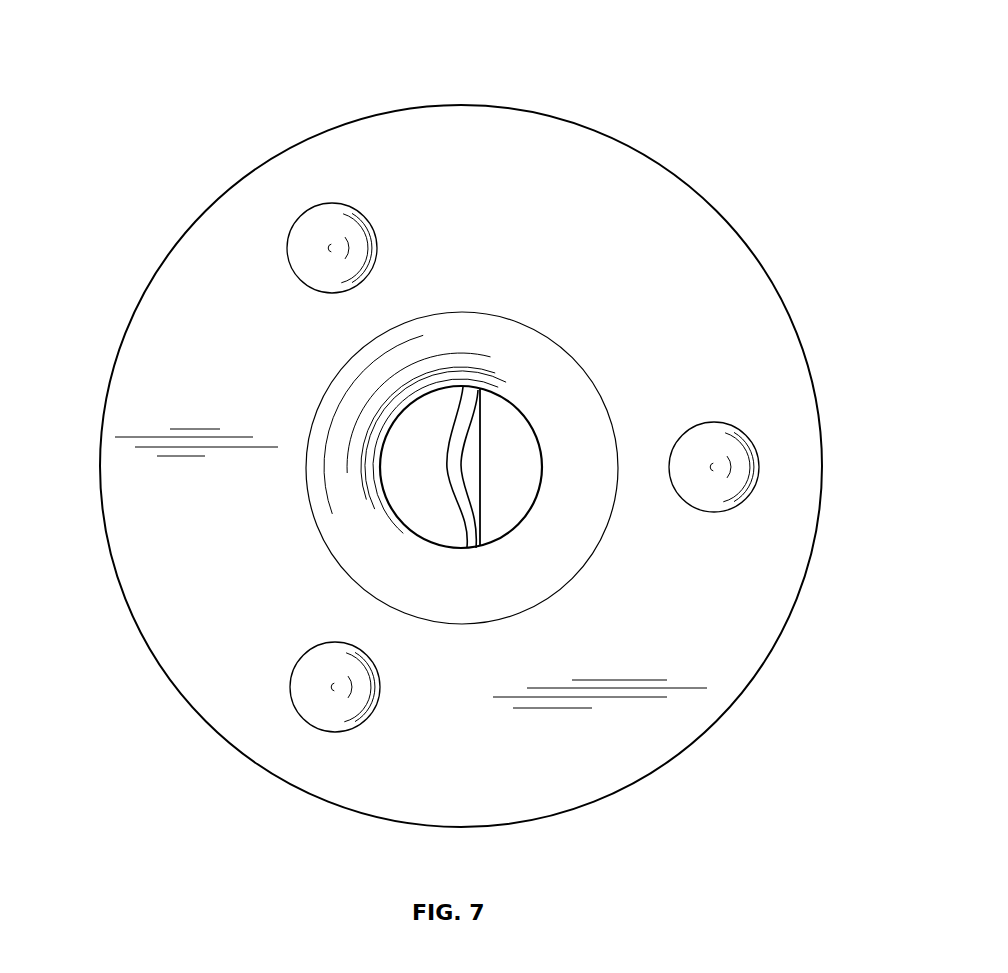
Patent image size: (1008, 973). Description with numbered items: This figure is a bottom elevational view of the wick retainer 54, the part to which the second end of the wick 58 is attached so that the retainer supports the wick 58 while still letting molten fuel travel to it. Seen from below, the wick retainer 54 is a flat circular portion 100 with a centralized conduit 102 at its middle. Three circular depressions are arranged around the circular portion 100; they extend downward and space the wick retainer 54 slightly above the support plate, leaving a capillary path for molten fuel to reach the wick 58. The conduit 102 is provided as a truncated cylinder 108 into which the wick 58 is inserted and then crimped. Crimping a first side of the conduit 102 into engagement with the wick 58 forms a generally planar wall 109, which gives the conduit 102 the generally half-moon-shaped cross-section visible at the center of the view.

The wick retainer 54 is at (166, 41).
The wick 58 is at (400, 470).
The flat circular portion 100 is at (194, 663).
The conduit 102 is at (473, 390).
The truncated cylinder 108 is at (397, 417).
The planar wall 109 is at (470, 443).